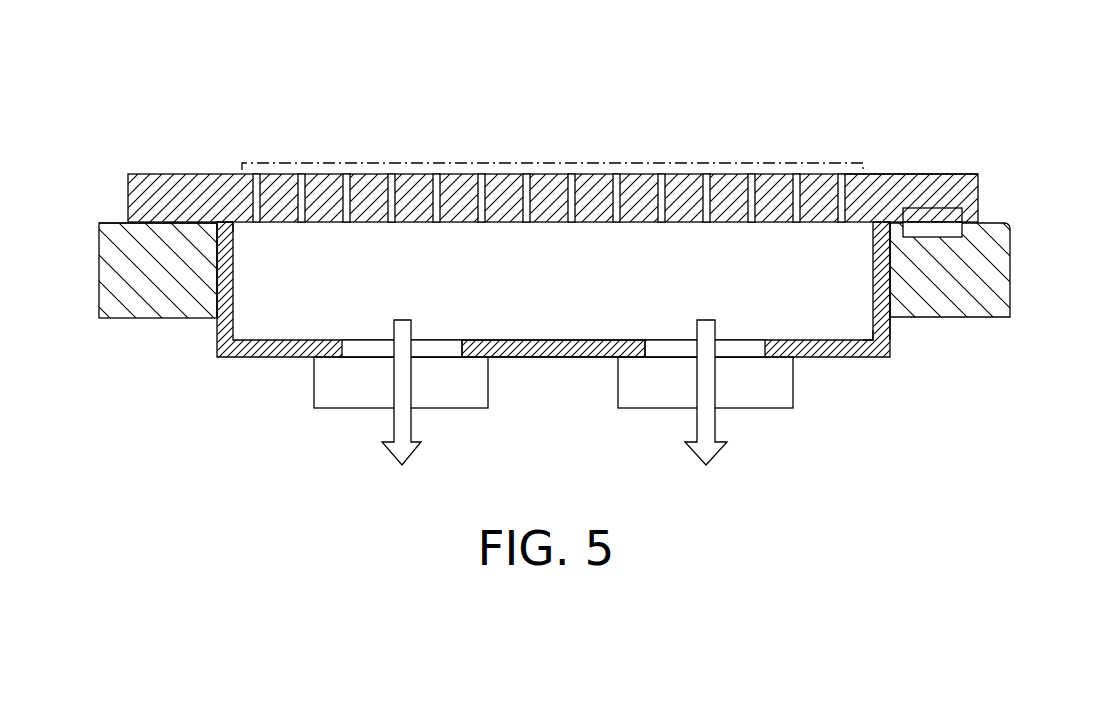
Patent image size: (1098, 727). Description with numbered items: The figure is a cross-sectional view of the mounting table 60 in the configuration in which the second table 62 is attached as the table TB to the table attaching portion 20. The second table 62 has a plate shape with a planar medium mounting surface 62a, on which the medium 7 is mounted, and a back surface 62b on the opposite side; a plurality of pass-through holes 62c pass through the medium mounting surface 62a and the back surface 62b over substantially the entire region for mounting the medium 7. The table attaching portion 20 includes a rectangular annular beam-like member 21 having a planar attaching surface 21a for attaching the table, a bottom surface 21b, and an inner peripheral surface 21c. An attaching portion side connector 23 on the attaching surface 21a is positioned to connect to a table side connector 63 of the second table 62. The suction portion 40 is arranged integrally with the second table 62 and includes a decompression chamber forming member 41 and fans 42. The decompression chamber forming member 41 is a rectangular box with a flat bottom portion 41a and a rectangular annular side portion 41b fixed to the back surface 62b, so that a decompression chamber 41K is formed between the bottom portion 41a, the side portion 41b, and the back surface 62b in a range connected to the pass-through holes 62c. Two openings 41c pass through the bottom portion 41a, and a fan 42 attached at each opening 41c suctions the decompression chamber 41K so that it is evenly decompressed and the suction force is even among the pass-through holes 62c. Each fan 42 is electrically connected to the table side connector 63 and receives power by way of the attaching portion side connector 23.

The medium 7 is at (276, 163).
The table attaching portion 20 is at (587, 267).
The beam-like member 21 is at (1010, 268).
The attaching surface 21a is at (160, 221).
The bottom surface 21b is at (126, 319).
The inner peripheral surface 21c is at (217, 288).
The attaching portion side connector 23 is at (955, 228).
The suction portion 40 is at (642, 343).
The decompression chamber forming member 41 is at (642, 337).
The bottom portion 41a is at (577, 357).
The side portion 41b is at (893, 283).
The opening 41c is at (442, 349).
The decompression chamber 41K is at (817, 324).
The fan 42 is at (341, 398).
The mounting table 60 is at (558, 211).
The second table 62 is at (558, 244).
The medium mounting surface 62a is at (887, 174).
The back surface 62b is at (238, 228).
The pass-through holes 62c is at (798, 175).
The table side connector 63 is at (962, 215).